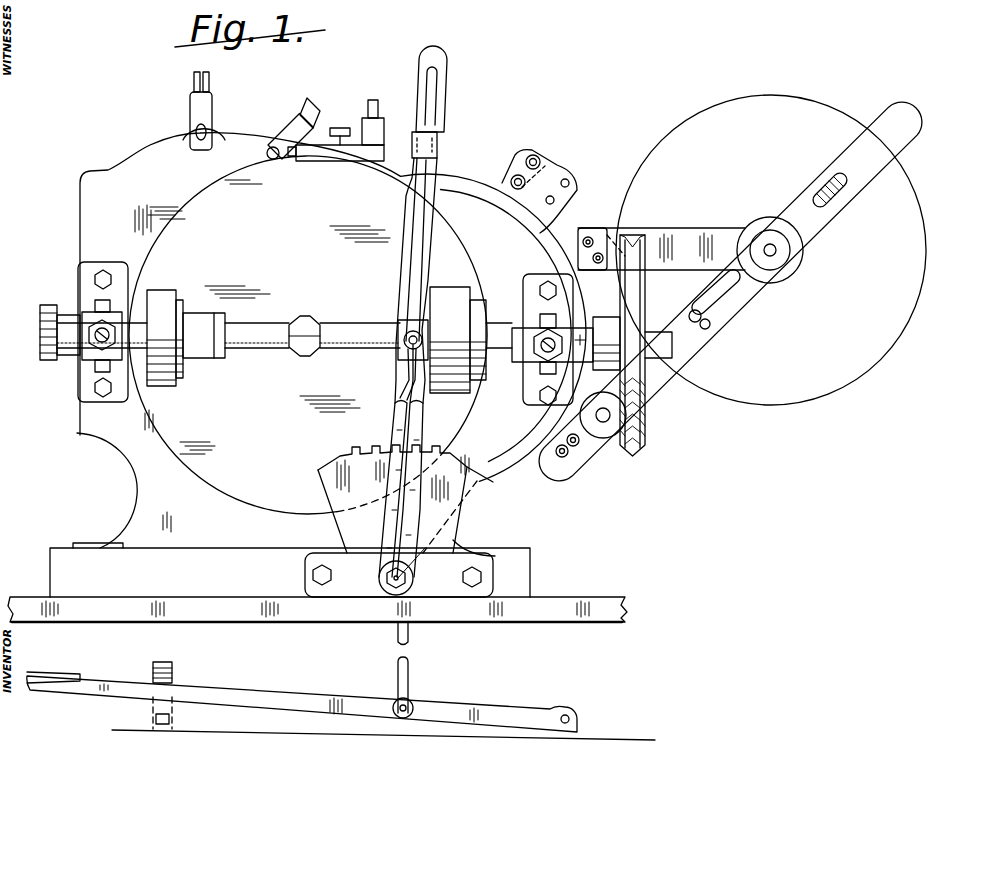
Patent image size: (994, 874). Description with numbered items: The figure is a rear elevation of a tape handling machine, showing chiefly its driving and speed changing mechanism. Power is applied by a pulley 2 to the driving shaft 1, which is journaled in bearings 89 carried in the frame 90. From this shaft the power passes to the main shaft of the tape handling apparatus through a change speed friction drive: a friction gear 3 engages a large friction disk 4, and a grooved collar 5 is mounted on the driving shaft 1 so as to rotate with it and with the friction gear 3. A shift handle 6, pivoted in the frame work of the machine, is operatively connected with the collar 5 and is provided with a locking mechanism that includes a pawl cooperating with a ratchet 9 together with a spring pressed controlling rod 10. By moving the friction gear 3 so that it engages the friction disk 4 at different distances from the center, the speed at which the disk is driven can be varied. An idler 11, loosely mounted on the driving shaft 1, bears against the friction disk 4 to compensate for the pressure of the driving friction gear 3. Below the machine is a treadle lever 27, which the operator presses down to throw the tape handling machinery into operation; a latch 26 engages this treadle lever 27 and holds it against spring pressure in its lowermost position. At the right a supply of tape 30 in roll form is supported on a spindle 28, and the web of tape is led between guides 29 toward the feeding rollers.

The driving shaft 1 is at (250, 326).
The pulley 2 is at (646, 428).
The friction gear 3 is at (455, 296).
The friction disk 4 is at (205, 470).
The grooved collar 5 is at (430, 300).
The shift handle 6 is at (401, 278).
The ratchet 9 is at (330, 470).
The spring pressed controlling rod 10 is at (410, 197).
The idler 11 is at (158, 292).
The latch 26 is at (175, 668).
The treadle lever 27 is at (303, 705).
The spindle 28 is at (782, 256).
The guides 29 is at (540, 178).
The supply of tape 30 is at (808, 378).
The bearings 89 is at (95, 356).
The frame 90 is at (115, 432).